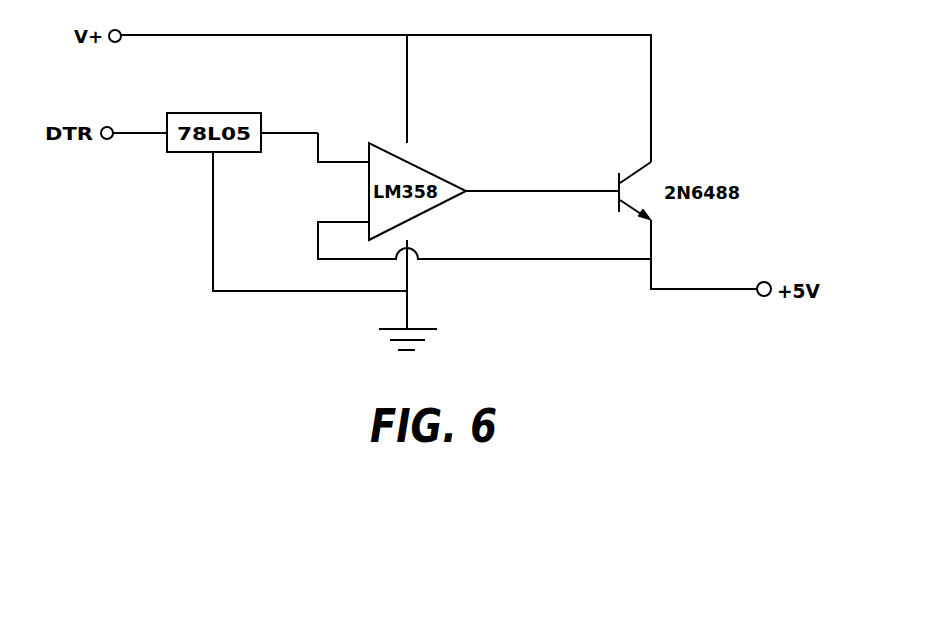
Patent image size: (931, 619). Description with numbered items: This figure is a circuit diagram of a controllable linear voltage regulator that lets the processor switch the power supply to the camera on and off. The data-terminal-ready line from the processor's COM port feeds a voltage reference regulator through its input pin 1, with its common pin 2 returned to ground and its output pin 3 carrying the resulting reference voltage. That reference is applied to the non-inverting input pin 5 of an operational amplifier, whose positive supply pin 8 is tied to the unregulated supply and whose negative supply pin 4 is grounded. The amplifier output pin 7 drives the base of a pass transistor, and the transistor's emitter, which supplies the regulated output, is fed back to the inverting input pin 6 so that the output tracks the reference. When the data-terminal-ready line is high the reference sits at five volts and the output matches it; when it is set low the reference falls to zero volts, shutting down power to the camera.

The 78L05 regulator input pin 1 is at (140, 120).
The 78L05 regulator ground pin 2 is at (310, 221).
The 78L05 regulator output pin 3 is at (289, 120).
The LM358 negative supply pin 4 is at (416, 275).
The LM358 non-inverting input pin 5 is at (343, 147).
The LM358 inverting input pin 6 is at (484, 228).
The LM358 output pin 7 is at (542, 179).
The LM358 positive supply pin 8 is at (416, 99).